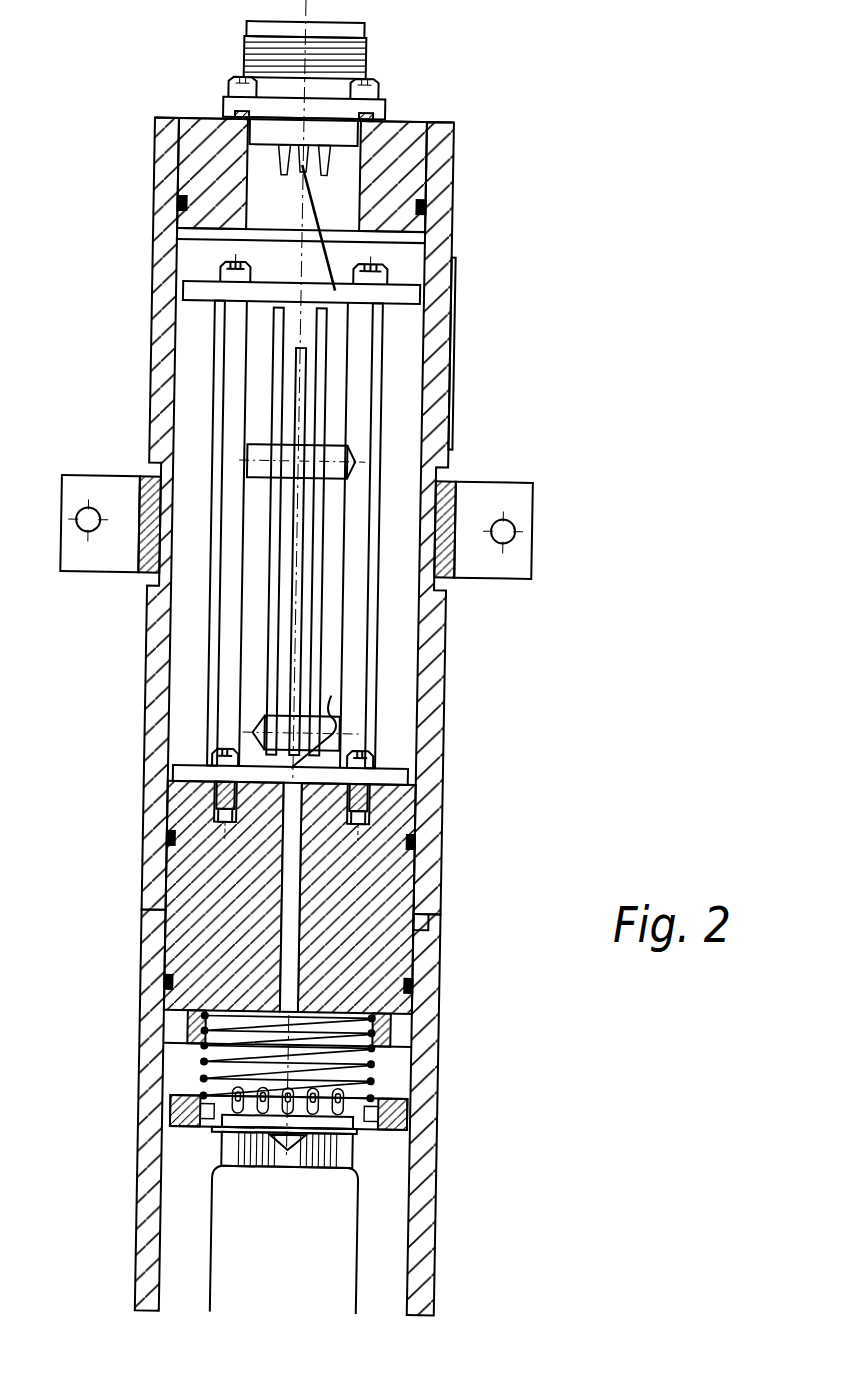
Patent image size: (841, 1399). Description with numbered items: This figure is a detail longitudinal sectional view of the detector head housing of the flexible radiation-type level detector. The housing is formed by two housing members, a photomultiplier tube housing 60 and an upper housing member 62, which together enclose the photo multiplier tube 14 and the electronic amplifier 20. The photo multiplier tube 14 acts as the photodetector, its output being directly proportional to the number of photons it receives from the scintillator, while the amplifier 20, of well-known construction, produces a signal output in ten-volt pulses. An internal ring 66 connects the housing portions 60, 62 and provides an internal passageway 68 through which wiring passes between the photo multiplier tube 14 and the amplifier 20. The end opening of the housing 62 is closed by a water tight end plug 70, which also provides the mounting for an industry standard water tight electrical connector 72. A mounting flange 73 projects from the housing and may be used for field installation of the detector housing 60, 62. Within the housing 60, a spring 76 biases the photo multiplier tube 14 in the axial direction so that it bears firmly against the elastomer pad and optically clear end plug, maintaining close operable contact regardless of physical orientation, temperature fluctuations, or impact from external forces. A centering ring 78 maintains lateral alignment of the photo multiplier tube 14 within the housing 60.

The photo multiplier tube 14 is at (330, 1262).
The electronic amplifier 20 is at (400, 397).
The photomultiplier tube housing 60 is at (430, 1143).
The housing member 62 is at (433, 640).
The internal ring 66 is at (413, 877).
The internal passageway 68 is at (287, 880).
The water tight end plug 70 is at (423, 133).
The water tight electrical connector 72 is at (357, 48).
The mounting flange 73 is at (522, 493).
The spring 76 is at (413, 1077).
The centering ring 78 is at (167, 1103).